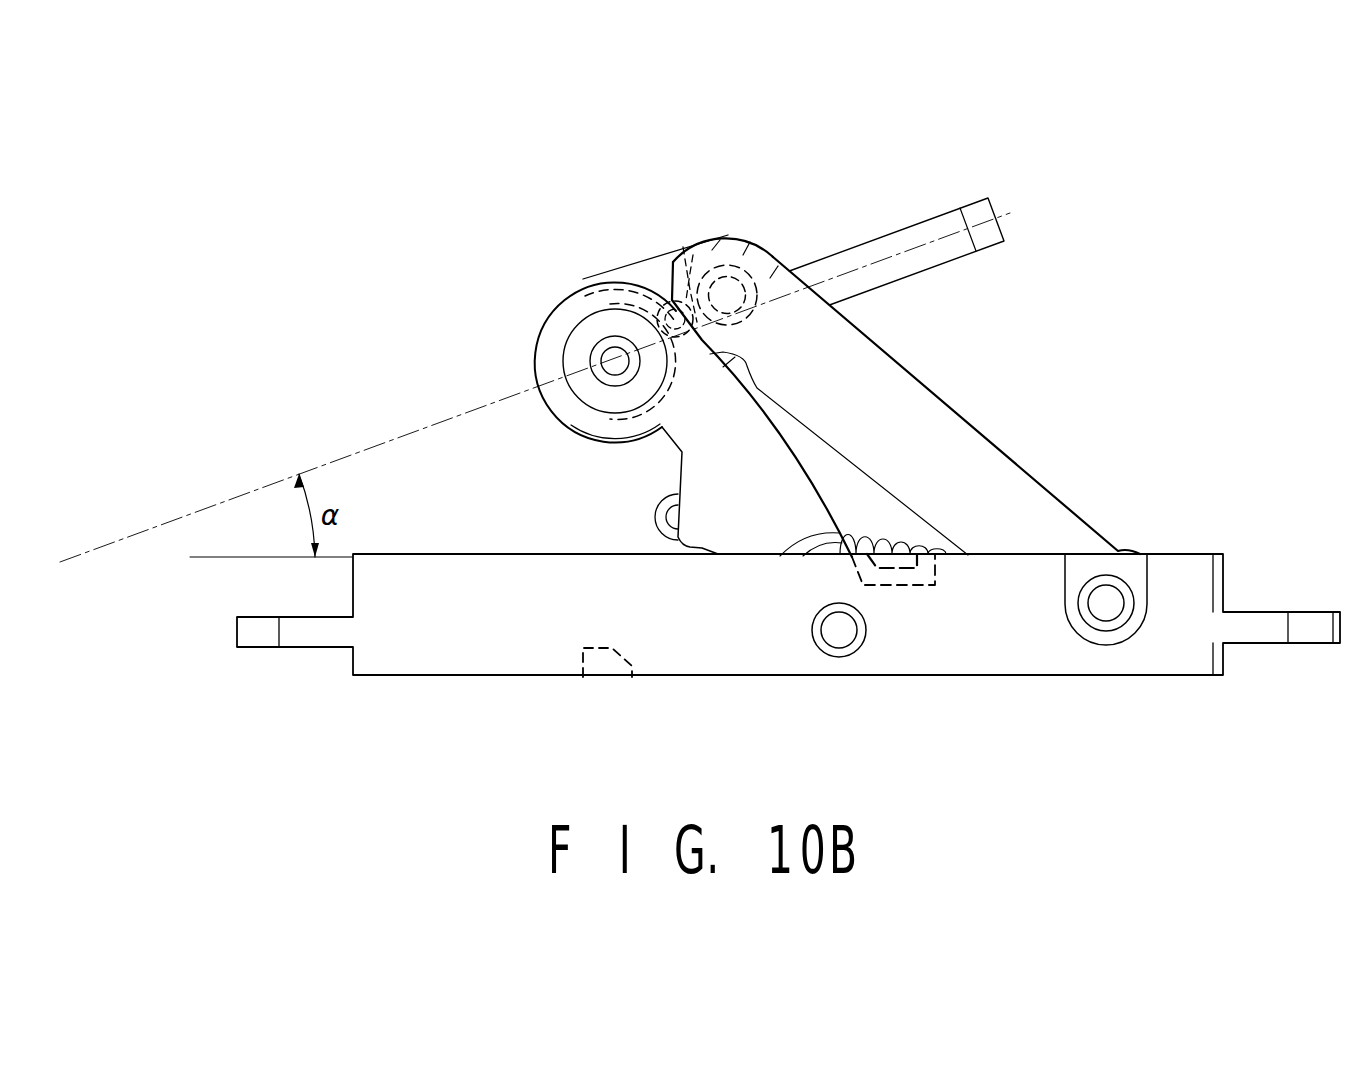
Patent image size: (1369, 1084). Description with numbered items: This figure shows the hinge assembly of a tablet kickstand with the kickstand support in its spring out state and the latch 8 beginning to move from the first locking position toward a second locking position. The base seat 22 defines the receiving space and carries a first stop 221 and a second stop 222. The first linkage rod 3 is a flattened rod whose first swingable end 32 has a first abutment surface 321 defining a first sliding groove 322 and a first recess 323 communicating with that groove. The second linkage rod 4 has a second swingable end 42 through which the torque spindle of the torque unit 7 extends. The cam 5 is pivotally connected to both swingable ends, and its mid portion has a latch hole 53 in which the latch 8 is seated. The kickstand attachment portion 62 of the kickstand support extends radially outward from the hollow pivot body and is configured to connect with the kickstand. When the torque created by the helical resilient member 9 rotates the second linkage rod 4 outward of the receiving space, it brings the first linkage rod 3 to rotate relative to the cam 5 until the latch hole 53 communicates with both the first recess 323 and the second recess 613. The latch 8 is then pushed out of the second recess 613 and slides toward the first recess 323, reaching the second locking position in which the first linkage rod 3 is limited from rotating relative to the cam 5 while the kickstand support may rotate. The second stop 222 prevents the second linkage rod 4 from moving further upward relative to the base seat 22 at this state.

The first linkage rod 3 is at (920, 432).
The second linkage rod 4 is at (712, 488).
The cam 5 is at (638, 278).
The torque unit 7 is at (578, 355).
The latch 8 is at (665, 270).
The latch hole 53 is at (675, 319).
The helical resilient member 9 is at (892, 542).
The base seat 22 is at (1183, 578).
The first swingable end 32 is at (745, 256).
The second swingable end 42 is at (593, 423).
The kickstand attachment portion 62 is at (907, 258).
The first stop 221 is at (603, 660).
The second stop 222 is at (890, 577).
The first abutment surface 321 is at (727, 250).
The first sliding groove 322 is at (683, 247).
The first recess 323 is at (783, 247).
The second recess 613 is at (580, 277).